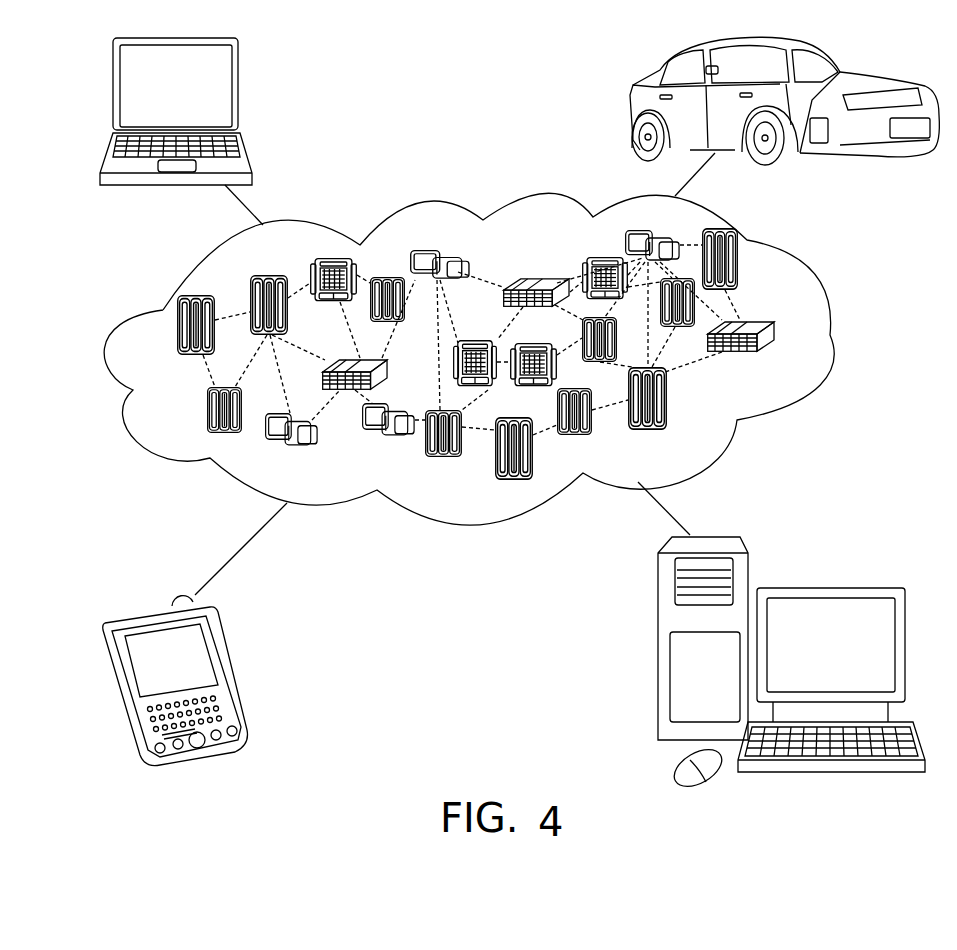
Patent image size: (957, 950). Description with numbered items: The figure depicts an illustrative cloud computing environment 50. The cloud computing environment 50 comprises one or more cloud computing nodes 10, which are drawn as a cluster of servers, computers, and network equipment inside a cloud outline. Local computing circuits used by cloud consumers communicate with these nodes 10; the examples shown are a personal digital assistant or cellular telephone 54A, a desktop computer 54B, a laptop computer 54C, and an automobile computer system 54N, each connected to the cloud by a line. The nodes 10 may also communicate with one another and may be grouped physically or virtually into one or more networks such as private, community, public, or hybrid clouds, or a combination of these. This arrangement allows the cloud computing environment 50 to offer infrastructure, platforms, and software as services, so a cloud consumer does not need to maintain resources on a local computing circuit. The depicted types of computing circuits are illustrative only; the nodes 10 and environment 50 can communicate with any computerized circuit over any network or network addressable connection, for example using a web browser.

The cloud computing nodes 10 is at (782, 362).
The cloud computing environment 50 is at (832, 334).
The personal digital assistant (PDA) or cellular telephone 54A is at (229, 673).
The desktop computer 54B is at (827, 587).
The laptop computer 54C is at (238, 93).
The automobile computer system 54N is at (632, 108).